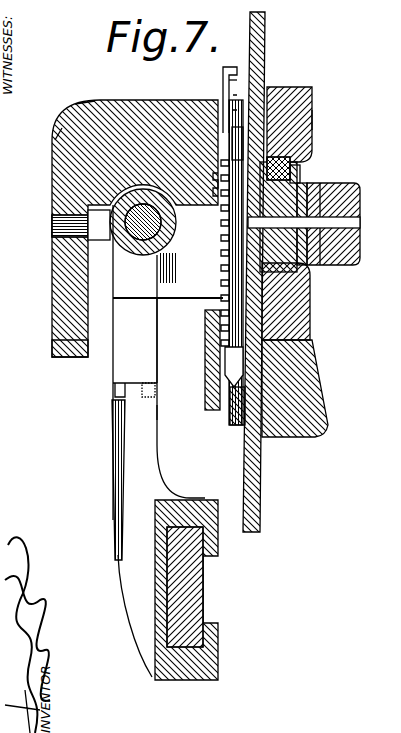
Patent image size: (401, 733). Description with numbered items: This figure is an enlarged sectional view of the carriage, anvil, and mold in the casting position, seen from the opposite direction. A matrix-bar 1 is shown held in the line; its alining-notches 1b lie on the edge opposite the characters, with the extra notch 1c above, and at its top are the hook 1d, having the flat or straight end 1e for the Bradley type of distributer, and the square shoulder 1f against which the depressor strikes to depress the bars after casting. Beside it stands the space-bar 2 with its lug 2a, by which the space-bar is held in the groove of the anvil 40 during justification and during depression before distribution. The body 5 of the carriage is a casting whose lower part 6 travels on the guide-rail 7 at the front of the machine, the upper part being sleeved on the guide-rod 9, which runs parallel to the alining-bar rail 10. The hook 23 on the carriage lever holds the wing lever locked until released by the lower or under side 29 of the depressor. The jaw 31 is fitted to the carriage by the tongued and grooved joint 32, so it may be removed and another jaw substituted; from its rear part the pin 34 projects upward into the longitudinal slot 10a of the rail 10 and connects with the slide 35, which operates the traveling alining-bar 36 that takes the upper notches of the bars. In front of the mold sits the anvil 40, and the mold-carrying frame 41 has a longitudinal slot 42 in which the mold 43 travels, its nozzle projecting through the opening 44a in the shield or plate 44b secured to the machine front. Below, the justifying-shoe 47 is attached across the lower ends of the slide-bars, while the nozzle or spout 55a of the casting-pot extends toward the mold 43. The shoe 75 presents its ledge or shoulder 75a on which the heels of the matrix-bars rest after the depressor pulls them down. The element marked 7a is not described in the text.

The matrix-bar 1 is at (234, 204).
The alining-notches 1b is at (158, 342).
The extra notch 1c is at (227, 67).
The hook 1d is at (225, 95).
The flat or straight end of hook 1e is at (228, 66).
The square shoulder 1f is at (312, 120).
The space-bar 2 is at (234, 367).
The lug 2a is at (75, 104).
The body of the carriage 5 is at (118, 493).
The lower part of the carriage 6 is at (158, 607).
The guide-rail 7 is at (205, 580).
The housing corner 7a is at (55, 140).
The guide rail or rod 9 is at (118, 235).
The alining-bar rail 10 is at (157, 300).
The longitudinal slot 10a is at (82, 357).
The hook 23 is at (300, 182).
The lower or under side of the depressor 29 is at (236, 428).
The jaw 31 is at (178, 268).
The tongued and grooved joint 32 is at (123, 392).
The pin 34 is at (310, 178).
The slide 35 is at (150, 252).
The traveling alining-bar 36 is at (312, 148).
The anvil 40 is at (52, 170).
The mold-carrying frame 41 is at (290, 92).
The longitudinal slot 42 is at (292, 160).
The mold 43 is at (300, 175).
The opening 44a is at (318, 348).
The shield or plate 44b is at (266, 40).
The justifying-shoe 47 is at (208, 412).
The nozzle or spout 55a is at (332, 268).
The shoe 75 is at (156, 390).
The ledge or shoulder 75a is at (158, 414).